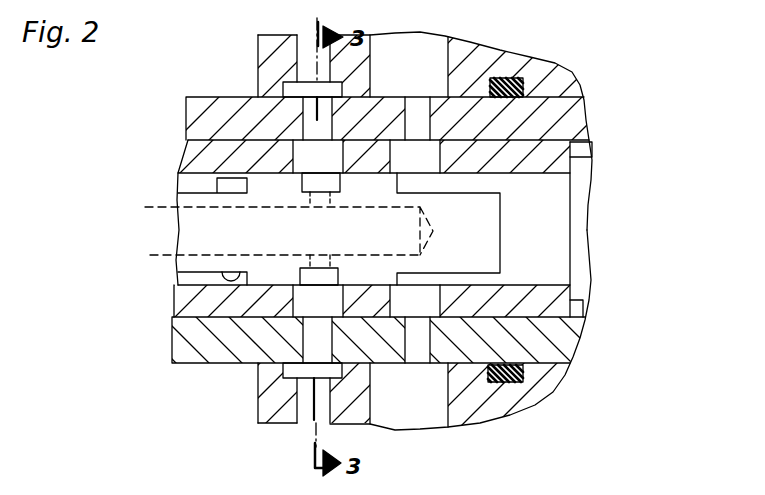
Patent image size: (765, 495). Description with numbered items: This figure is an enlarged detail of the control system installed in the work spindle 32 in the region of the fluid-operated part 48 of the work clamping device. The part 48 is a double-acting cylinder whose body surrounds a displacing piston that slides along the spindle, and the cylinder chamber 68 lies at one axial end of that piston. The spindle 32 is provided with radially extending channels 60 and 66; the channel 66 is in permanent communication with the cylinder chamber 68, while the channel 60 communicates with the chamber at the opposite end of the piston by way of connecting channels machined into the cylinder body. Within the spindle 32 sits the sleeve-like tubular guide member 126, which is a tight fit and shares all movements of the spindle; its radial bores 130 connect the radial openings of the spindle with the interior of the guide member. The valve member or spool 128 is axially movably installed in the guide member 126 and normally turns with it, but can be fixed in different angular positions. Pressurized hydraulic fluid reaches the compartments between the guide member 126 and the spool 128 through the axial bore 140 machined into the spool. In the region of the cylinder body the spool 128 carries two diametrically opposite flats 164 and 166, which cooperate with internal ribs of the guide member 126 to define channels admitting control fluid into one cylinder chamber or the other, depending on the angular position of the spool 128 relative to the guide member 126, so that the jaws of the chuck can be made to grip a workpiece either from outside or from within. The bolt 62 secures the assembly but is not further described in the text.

The spindle 32 is at (583, 338).
The fluid-operated part of the clamping device 48 is at (560, 62).
The radial channel 60 is at (307, 118).
The clamping bolt 62 is at (303, 60).
The radial channel 66 is at (417, 118).
The cylinder chamber 68 is at (422, 72).
The tubular guide member 126 is at (550, 165).
The spool 128 is at (212, 276).
The radial bores 130 is at (308, 152).
The axial bore 140 is at (190, 208).
The flat 164 is at (222, 182).
The flat 166 is at (238, 272).